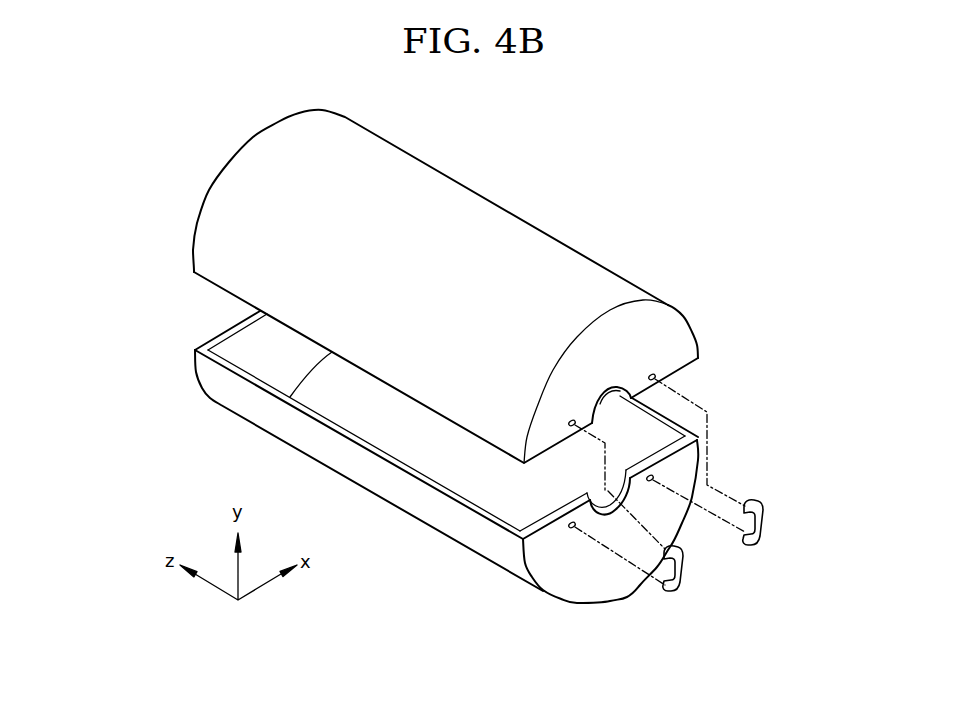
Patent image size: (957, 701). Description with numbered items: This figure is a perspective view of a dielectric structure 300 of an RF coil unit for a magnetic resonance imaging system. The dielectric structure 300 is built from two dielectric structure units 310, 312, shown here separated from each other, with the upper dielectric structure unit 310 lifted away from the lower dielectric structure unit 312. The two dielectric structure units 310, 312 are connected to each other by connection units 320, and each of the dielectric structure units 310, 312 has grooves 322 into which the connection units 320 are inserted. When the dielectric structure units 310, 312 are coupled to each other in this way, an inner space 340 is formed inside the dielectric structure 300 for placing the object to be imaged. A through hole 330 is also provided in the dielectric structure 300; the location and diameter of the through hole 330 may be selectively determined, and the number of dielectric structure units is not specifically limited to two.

The dielectric structure 300 is at (691, 154).
The dielectric structure unit 310 is at (680, 340).
The dielectric structure unit 312 is at (680, 468).
The connection units 320 is at (682, 587).
The grooves 322 is at (656, 378).
The through hole 330 is at (608, 491).
The inner space 340 is at (518, 502).